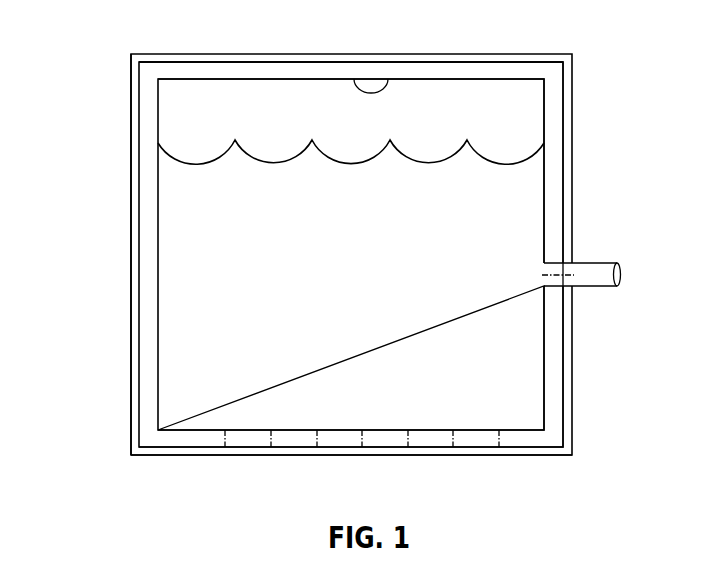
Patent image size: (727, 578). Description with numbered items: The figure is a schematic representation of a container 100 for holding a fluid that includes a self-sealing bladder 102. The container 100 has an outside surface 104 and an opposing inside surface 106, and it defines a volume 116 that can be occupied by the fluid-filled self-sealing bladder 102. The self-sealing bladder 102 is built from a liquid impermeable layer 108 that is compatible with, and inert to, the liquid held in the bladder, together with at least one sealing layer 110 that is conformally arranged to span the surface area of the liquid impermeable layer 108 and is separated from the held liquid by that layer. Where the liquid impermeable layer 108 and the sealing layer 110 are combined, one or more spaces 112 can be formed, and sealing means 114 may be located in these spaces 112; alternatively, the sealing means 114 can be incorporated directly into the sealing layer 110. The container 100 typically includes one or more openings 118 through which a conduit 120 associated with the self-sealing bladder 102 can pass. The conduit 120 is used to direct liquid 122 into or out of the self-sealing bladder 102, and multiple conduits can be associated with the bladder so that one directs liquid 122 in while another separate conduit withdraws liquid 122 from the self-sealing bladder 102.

The container 100 is at (131, 273).
The self-sealing bladder 102 is at (176, 72).
The outside surface 104 is at (165, 455).
The inside surface 106 is at (127, 411).
The liquid impermeable layer 108 is at (388, 90).
The sealing layer 110 is at (315, 62).
The spaces 112 is at (498, 70).
The sealing means 114 is at (552, 127).
The volume 116 is at (185, 118).
The openings 118 is at (574, 262).
The conduit 120 is at (597, 278).
The liquid 122 is at (430, 329).